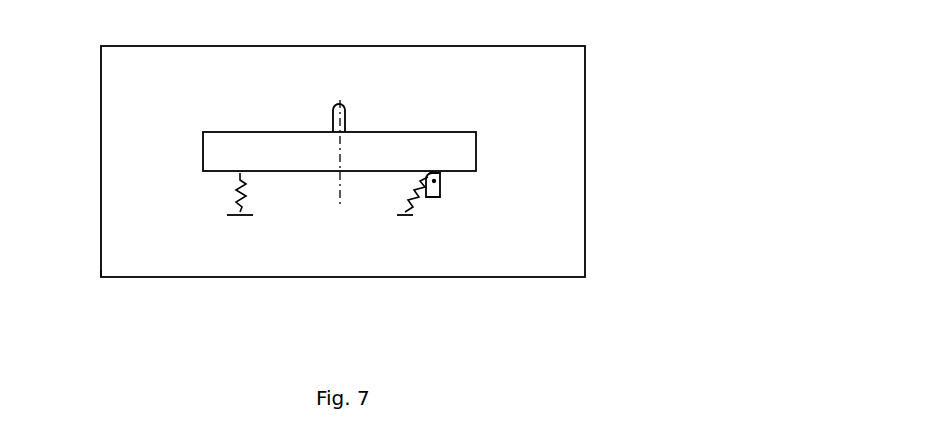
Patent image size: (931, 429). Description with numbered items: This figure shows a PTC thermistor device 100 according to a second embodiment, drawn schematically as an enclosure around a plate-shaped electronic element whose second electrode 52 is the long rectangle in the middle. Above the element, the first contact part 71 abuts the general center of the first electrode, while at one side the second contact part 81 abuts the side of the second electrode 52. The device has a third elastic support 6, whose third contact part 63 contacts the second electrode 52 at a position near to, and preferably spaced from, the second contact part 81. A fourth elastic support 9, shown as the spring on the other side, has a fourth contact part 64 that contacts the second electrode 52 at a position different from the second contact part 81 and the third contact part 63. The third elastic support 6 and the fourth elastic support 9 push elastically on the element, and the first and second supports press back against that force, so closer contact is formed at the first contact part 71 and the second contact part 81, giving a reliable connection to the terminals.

The PTC thermistor device 100 is at (585, 46).
The second electrode 52 is at (358, 171).
The first contact part 71 is at (333, 117).
The second contact part 81 is at (435, 181).
The third contact part 63 is at (433, 170).
The third elastic support 6 is at (438, 192).
The fourth contact part 64 is at (235, 172).
The fourth elastic support 9 is at (238, 185).